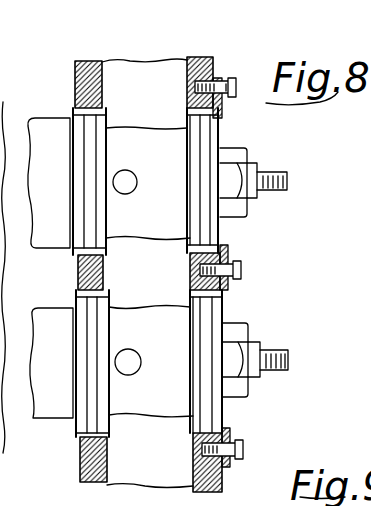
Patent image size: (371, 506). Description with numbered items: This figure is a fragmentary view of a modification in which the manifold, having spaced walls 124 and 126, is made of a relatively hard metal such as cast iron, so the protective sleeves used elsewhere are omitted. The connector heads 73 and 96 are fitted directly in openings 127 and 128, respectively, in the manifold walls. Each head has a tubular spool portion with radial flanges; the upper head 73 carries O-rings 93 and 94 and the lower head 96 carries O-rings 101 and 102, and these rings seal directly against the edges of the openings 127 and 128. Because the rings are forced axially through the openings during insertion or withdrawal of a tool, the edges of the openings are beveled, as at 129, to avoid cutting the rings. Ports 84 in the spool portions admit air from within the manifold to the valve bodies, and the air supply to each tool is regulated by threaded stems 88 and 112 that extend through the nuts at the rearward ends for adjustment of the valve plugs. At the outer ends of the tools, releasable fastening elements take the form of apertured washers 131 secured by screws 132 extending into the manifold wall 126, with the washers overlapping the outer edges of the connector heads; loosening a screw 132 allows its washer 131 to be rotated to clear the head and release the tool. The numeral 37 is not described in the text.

The manifold wall 124 is at (76, 62).
The manifold wall 126 is at (212, 58).
The opening 127 is at (74, 112).
The opening 128 is at (77, 293).
The bevel 129 is at (76, 95).
The apertured washer 131 is at (217, 77).
The screw 132 is at (232, 85).
The fluid connector head 73 is at (240, 140).
The threaded stem 88 is at (288, 181).
The O-ring 93 is at (90, 217).
The O-ring 94 is at (203, 204).
The port 84 is at (130, 176).
The fluid connector head 96 is at (245, 313).
The O-ring 101 is at (90, 330).
The O-ring 102 is at (204, 377).
The threaded adjusting stem 112 is at (290, 359).
The frame 37 is at (246, 498).